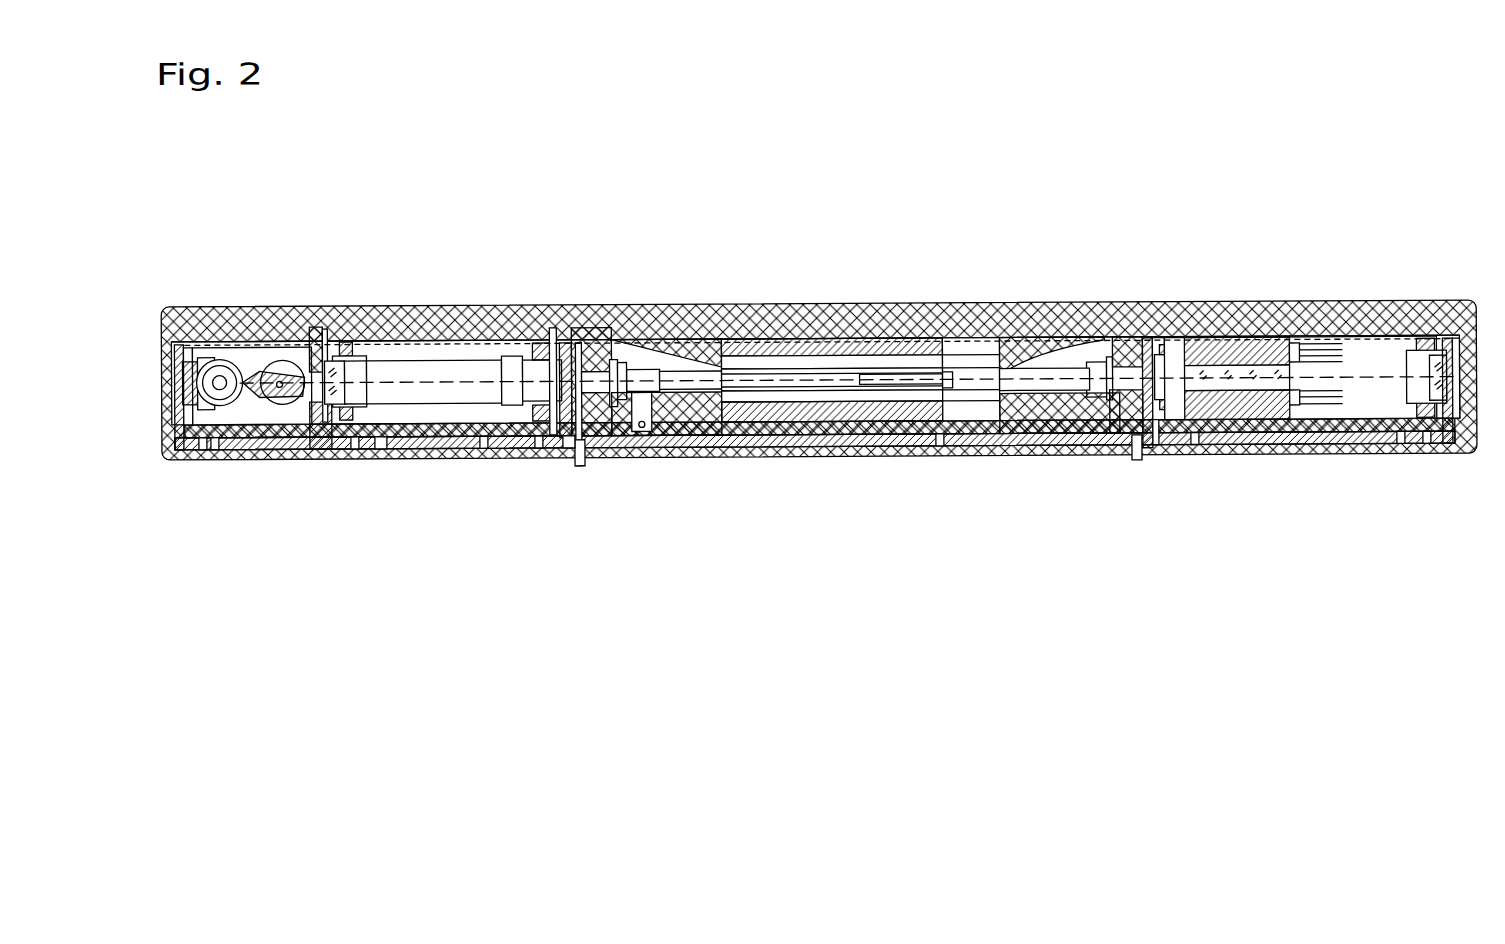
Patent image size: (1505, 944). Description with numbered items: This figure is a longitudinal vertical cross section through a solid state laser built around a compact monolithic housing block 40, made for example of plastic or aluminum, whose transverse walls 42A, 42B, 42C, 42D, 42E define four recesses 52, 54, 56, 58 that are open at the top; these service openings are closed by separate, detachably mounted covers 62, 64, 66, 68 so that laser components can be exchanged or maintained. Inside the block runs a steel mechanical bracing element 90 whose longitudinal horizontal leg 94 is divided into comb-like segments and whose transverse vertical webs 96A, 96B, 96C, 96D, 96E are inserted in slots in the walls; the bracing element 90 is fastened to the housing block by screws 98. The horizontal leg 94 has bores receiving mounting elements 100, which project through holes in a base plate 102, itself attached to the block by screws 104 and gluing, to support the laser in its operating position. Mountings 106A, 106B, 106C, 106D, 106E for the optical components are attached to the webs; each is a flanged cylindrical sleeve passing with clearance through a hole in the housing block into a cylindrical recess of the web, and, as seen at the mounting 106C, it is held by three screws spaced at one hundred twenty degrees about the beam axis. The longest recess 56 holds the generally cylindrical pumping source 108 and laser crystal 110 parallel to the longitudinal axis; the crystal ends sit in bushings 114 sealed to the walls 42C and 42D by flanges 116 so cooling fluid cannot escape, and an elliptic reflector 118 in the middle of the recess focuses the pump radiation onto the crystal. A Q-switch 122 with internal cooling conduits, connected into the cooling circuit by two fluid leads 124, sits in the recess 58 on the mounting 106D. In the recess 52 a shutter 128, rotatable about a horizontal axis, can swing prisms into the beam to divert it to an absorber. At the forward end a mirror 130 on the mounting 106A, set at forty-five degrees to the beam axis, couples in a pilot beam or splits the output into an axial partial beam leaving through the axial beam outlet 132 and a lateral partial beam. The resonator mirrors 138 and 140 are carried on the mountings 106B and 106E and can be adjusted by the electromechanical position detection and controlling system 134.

The monolithic housing block 40 is at (745, 448).
The transverse wall 42A is at (183, 345).
The transverse wall 42B is at (325, 340).
The transverse wall 42C is at (570, 352).
The transverse wall 42D is at (1138, 345).
The transverse wall 42E is at (1452, 352).
The recess 52 is at (265, 355).
The recess 54 is at (488, 360).
The recess 56 is at (660, 366).
The recess 58 is at (1393, 363).
The cover 62 is at (238, 312).
The cover 64 is at (438, 308).
The cover 66 is at (745, 340).
The cover 68 is at (1221, 328).
The mechanical bracing element 90 is at (203, 447).
The longitudinal horizontal leg 94 is at (782, 448).
The transverse vertical web 96A is at (177, 440).
The transverse vertical web 96B is at (378, 445).
The transverse vertical web 96C is at (568, 442).
The transverse vertical web 96D is at (1155, 452).
The transverse vertical web 96E is at (1453, 447).
The screws 98 is at (600, 448).
The mounting elements 100 is at (590, 458).
The base plate 102 is at (433, 447).
The screws 104 is at (1120, 450).
The mounting 106A is at (213, 450).
The mounting 106B is at (353, 448).
The mounting 106C is at (538, 447).
The mounting 106D is at (1193, 453).
The mounting 106E is at (1400, 453).
The pumping source 108 is at (810, 377).
The laser crystal 110 is at (895, 379).
The bushings 114 is at (680, 366).
The flanges 116 is at (620, 373).
The elliptic reflector 118 is at (925, 349).
The Q-switch 122 is at (1245, 389).
The fluid leads 124 is at (1340, 404).
The shutter 128 is at (285, 396).
The mirror 130 is at (232, 405).
The axial beam outlet 132 is at (170, 307).
The electromechanical position detection and controlling system 134 is at (293, 400).
The mirror 138 is at (350, 352).
The mirror 140 is at (1428, 352).